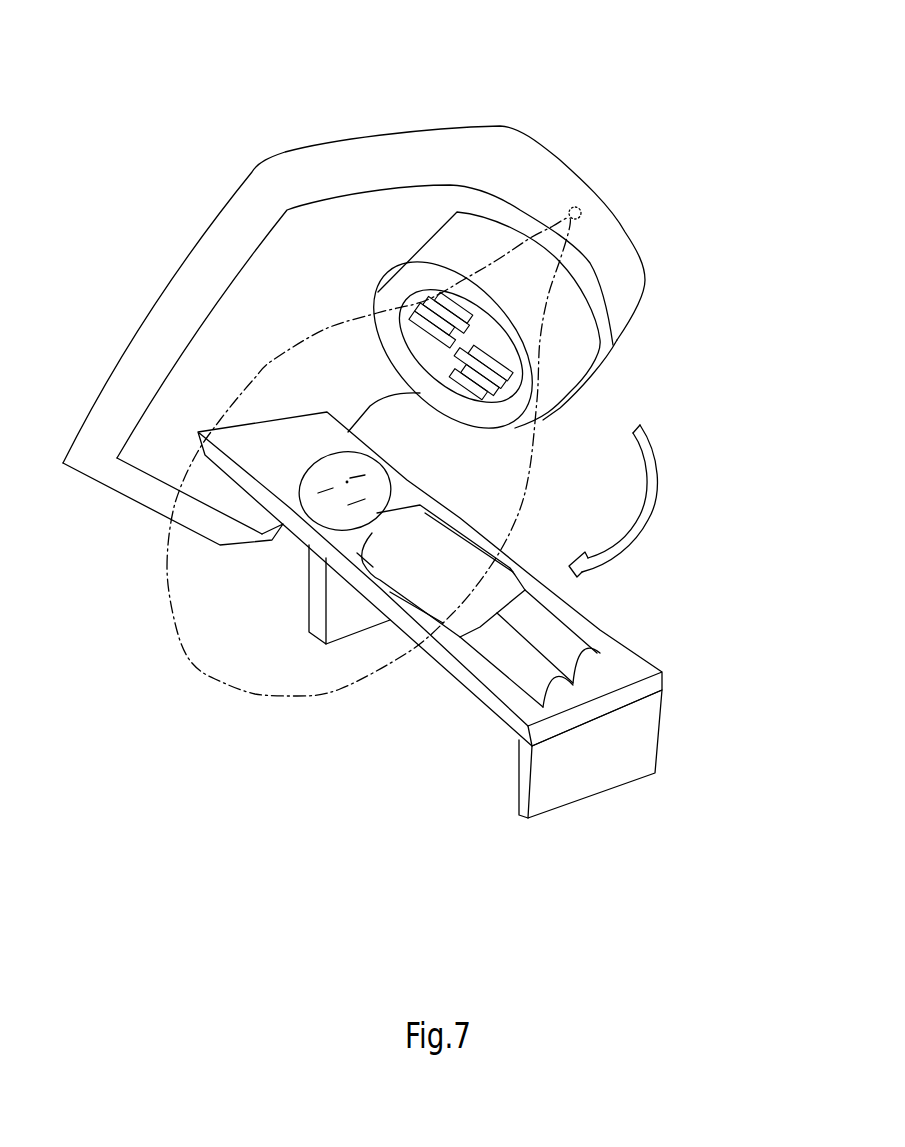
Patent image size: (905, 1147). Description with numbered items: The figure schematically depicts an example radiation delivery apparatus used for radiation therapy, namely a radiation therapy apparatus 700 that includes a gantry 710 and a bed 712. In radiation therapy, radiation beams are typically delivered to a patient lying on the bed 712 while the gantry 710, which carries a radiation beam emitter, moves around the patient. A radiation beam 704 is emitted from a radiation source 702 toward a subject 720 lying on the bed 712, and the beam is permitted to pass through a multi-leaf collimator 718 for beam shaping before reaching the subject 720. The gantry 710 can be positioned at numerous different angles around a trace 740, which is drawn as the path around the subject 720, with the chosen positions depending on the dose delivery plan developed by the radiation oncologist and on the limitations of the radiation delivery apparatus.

The radiation therapy apparatus 700 is at (683, 97).
The radiation source 702 is at (588, 206).
The radiation beam 704 is at (525, 324).
The multi-leaf collimator 718 is at (510, 390).
The gantry 710 is at (317, 182).
The bed 712 is at (633, 685).
The subject 720 is at (387, 552).
The trace 740 is at (193, 667).